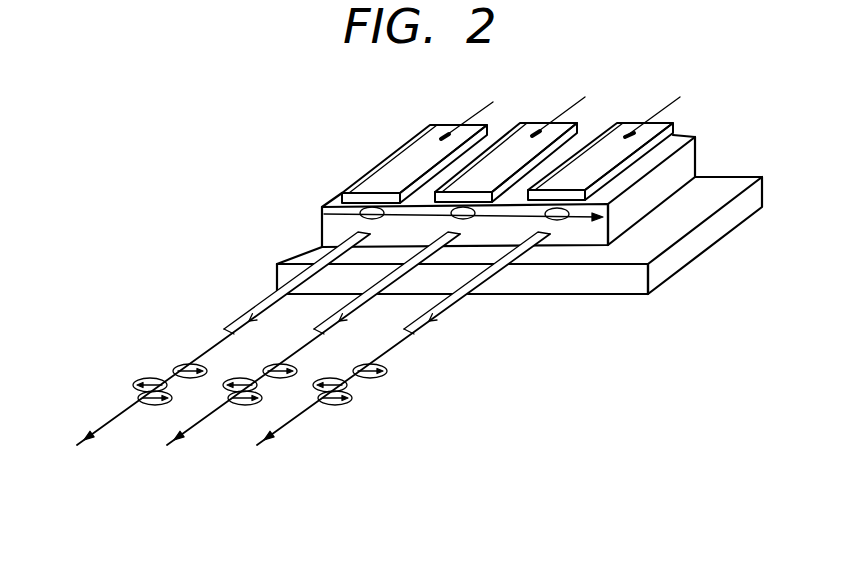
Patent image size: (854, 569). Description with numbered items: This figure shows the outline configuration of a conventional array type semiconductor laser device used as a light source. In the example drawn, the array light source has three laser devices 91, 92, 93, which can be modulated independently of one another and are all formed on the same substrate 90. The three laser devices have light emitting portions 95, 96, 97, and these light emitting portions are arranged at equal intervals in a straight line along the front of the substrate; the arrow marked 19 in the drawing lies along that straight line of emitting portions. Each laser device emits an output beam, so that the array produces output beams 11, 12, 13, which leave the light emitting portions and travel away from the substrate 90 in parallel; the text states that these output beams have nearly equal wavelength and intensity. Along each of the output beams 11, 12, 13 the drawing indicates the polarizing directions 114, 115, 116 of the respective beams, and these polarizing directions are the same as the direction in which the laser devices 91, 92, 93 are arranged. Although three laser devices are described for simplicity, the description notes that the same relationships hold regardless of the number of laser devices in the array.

The substrate 90 is at (700, 141).
The laser device 91 is at (630, 122).
The laser device 92 is at (537, 122).
The laser device 93 is at (446, 123).
The light emitting portion 97 is at (348, 215).
The light emitting portion 96 is at (466, 217).
The light emitting portion 95 is at (557, 218).
The propagation direction arrow 19 is at (582, 221).
The output beam 11 is at (449, 308).
The output beam 12 is at (359, 308).
The output beam 13 is at (269, 308).
The polarizing direction 114 is at (330, 406).
The polarizing direction 115 is at (240, 406).
The polarizing direction 116 is at (150, 406).